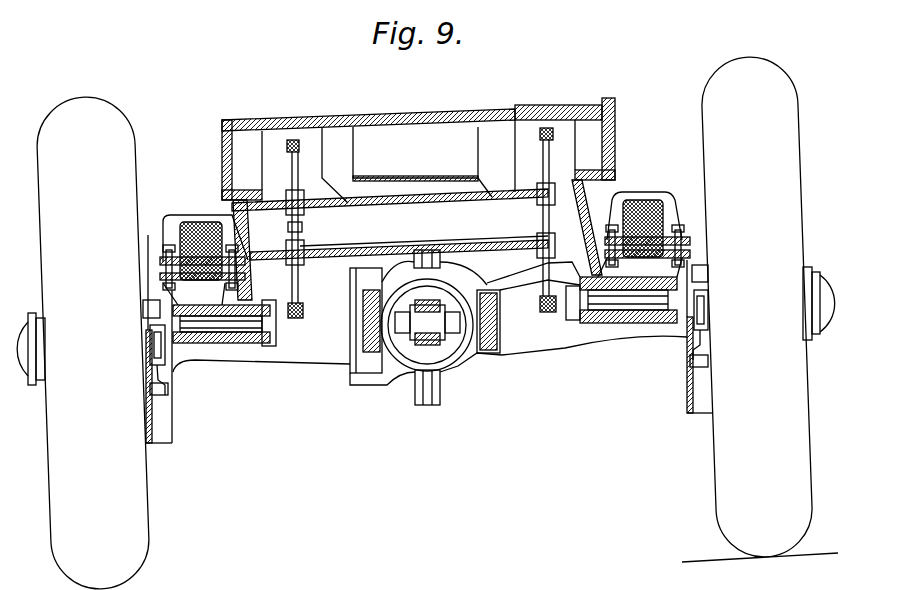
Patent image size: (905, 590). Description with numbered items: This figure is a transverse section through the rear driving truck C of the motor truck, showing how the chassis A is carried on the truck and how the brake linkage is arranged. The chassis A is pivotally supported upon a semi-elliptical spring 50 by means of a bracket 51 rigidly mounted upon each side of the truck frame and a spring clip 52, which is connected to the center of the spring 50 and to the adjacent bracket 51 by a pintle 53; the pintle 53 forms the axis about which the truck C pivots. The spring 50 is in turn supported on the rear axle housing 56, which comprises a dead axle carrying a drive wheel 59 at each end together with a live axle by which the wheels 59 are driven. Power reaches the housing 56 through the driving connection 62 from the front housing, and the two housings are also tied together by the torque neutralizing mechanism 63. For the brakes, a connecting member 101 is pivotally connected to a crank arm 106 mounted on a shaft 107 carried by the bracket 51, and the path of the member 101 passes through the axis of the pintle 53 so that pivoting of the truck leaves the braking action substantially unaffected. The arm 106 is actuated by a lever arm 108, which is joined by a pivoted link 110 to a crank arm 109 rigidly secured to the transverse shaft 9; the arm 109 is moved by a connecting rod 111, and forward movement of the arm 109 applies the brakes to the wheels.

The drive wheel 59 is at (85, 103).
The chassis A is at (272, 124).
The transverse shaft 9 is at (406, 197).
The shaft 107 is at (396, 251).
The rear driving truck C is at (444, 222).
The connecting rod 111 is at (306, 140).
The crank arm 109 is at (297, 210).
The pivoted link 110 is at (304, 223).
The lever arm 108 is at (297, 243).
The crank arm 106 is at (352, 277).
The connecting member 101 is at (305, 311).
The spring clip 52 is at (175, 214).
The semi-elliptical spring 50 is at (208, 223).
The bracket 51 is at (306, 236).
The pintle 53 is at (218, 345).
The rear axle housing 56 is at (563, 340).
The torque neutralizing mechanism 63 is at (350, 345).
The driving connection 62 is at (455, 345).